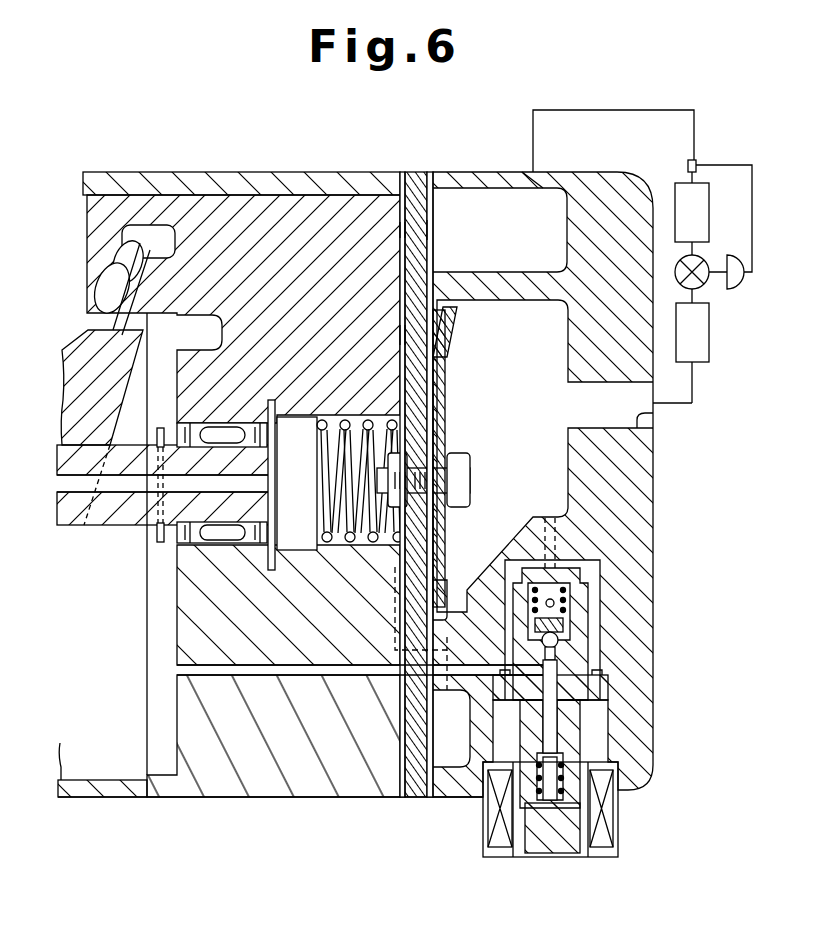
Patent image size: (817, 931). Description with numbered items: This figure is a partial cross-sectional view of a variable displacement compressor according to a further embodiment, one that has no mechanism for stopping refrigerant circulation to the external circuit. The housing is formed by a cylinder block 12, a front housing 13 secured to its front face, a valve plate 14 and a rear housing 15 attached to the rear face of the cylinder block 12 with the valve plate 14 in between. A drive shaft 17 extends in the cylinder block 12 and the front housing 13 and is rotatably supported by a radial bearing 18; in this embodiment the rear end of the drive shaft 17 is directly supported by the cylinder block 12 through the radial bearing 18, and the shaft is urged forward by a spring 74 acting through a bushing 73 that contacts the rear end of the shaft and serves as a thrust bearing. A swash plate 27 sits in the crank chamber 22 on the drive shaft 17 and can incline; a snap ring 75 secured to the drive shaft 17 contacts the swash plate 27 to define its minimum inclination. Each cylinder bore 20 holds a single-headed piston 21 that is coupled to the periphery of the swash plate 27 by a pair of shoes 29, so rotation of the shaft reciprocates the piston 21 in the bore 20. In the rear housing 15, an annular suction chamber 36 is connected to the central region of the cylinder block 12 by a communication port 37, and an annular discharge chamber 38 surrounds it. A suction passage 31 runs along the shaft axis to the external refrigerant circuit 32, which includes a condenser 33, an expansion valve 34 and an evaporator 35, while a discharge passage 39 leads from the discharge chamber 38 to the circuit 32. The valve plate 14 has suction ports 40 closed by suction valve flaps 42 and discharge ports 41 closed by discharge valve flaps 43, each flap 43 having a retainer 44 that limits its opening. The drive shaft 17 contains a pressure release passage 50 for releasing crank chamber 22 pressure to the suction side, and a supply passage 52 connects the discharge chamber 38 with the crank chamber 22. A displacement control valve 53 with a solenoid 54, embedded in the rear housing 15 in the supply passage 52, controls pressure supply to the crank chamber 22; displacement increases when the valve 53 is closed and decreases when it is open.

The cylinder block 12 is at (224, 798).
The front housing 13 is at (106, 798).
The valve plate 14 is at (422, 798).
The rear housing 15 is at (655, 606).
The drive shaft 17 is at (105, 522).
The radial bearing 18 is at (215, 540).
The cylinder bore 20 is at (332, 200).
The piston 21 is at (222, 335).
The crank chamber 22 is at (136, 760).
The swash plate 27 is at (68, 355).
The shoe 29 is at (183, 275).
The suction passage 31 is at (548, 162).
The external refrigerant circuit 32 is at (695, 405).
The condenser 33 is at (712, 348).
The expansion valve 34 is at (706, 288).
The evaporator 35 is at (706, 215).
The suction chamber 36 is at (543, 259).
The communication port 37 is at (393, 603).
The discharge chamber 38 is at (538, 412).
The discharge passage 39 is at (653, 427).
The suction port 40 is at (433, 228).
The discharge port 41 is at (405, 335).
The suction valve flap 42 is at (405, 232).
The discharge valve flap 43 is at (455, 330).
The retainer 44 is at (446, 365).
The pressure release passage 50 is at (132, 477).
The supply passage 52 is at (177, 670).
The displacement control valve 53 is at (633, 813).
The solenoid 54 is at (608, 832).
The bushing 73 is at (298, 440).
The spring 74 is at (240, 548).
The snap ring 75 is at (160, 545).